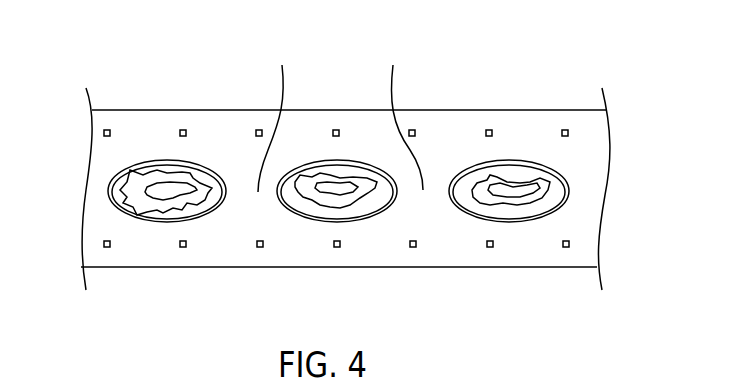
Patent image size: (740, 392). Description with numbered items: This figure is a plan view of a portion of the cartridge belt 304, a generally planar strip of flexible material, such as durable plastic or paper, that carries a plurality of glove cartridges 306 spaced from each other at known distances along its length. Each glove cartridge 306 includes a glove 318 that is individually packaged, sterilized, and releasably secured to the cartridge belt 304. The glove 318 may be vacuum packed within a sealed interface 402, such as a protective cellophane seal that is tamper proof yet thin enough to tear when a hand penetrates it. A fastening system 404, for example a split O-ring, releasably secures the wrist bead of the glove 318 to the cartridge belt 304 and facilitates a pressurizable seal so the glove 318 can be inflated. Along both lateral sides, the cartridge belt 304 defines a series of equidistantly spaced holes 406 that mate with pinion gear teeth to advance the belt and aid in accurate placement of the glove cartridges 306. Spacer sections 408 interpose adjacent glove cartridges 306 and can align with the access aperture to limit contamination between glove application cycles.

The cartridge belt 304 is at (130, 42).
The glove cartridge 306 is at (142, 230).
The glove 318 is at (148, 176).
The sealed interface 402 is at (122, 187).
The fastening system 404 is at (217, 208).
The holes 406 is at (258, 128).
The spacer section 408 is at (340, 115).